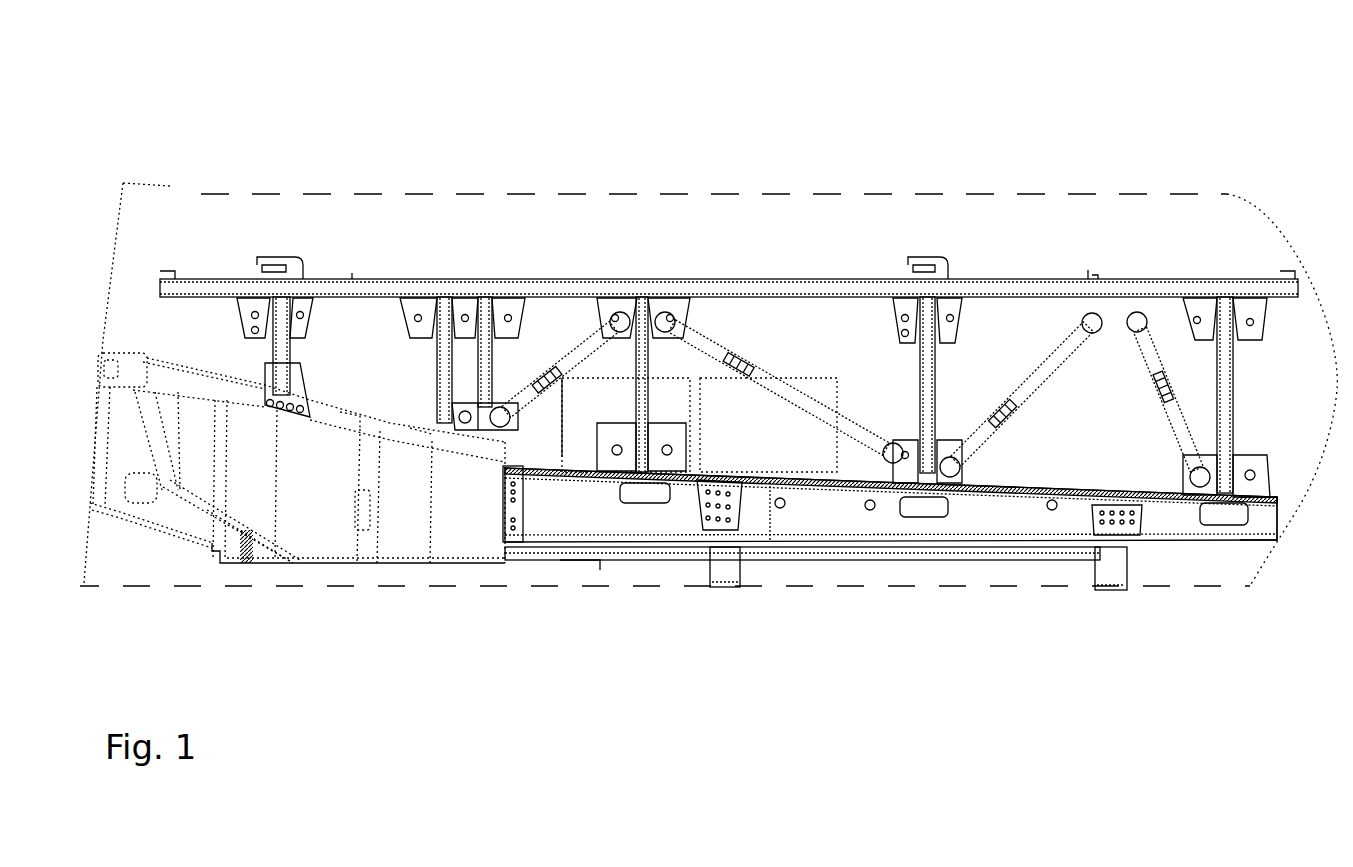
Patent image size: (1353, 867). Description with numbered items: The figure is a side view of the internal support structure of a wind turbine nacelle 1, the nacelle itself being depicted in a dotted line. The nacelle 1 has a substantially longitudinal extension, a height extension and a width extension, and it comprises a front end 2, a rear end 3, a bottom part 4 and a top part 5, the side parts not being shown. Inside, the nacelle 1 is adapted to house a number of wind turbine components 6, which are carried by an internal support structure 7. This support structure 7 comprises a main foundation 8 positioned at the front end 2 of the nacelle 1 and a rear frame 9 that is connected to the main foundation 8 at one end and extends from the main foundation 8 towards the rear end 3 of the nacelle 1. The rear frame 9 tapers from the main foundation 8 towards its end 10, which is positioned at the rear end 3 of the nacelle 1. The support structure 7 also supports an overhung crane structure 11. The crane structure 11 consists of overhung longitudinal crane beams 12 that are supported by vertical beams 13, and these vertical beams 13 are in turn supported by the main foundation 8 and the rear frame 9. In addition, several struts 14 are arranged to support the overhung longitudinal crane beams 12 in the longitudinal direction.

The nacelle 1 is at (190, 191).
The front end 2 is at (85, 530).
The rear end 3 is at (1318, 297).
The bottom part 4 is at (770, 586).
The top part 5 is at (847, 191).
The wind turbine components 6 is at (614, 390).
The internal support structure 7 is at (445, 527).
The main foundation 8 is at (292, 510).
The rear frame 9 is at (828, 510).
The end 10 is at (1263, 517).
The overhung crane structure 11 is at (1027, 288).
The overhung longitudinal crane beams 12 is at (523, 287).
The vertical beams 13 is at (282, 345).
The struts 14 is at (553, 368).